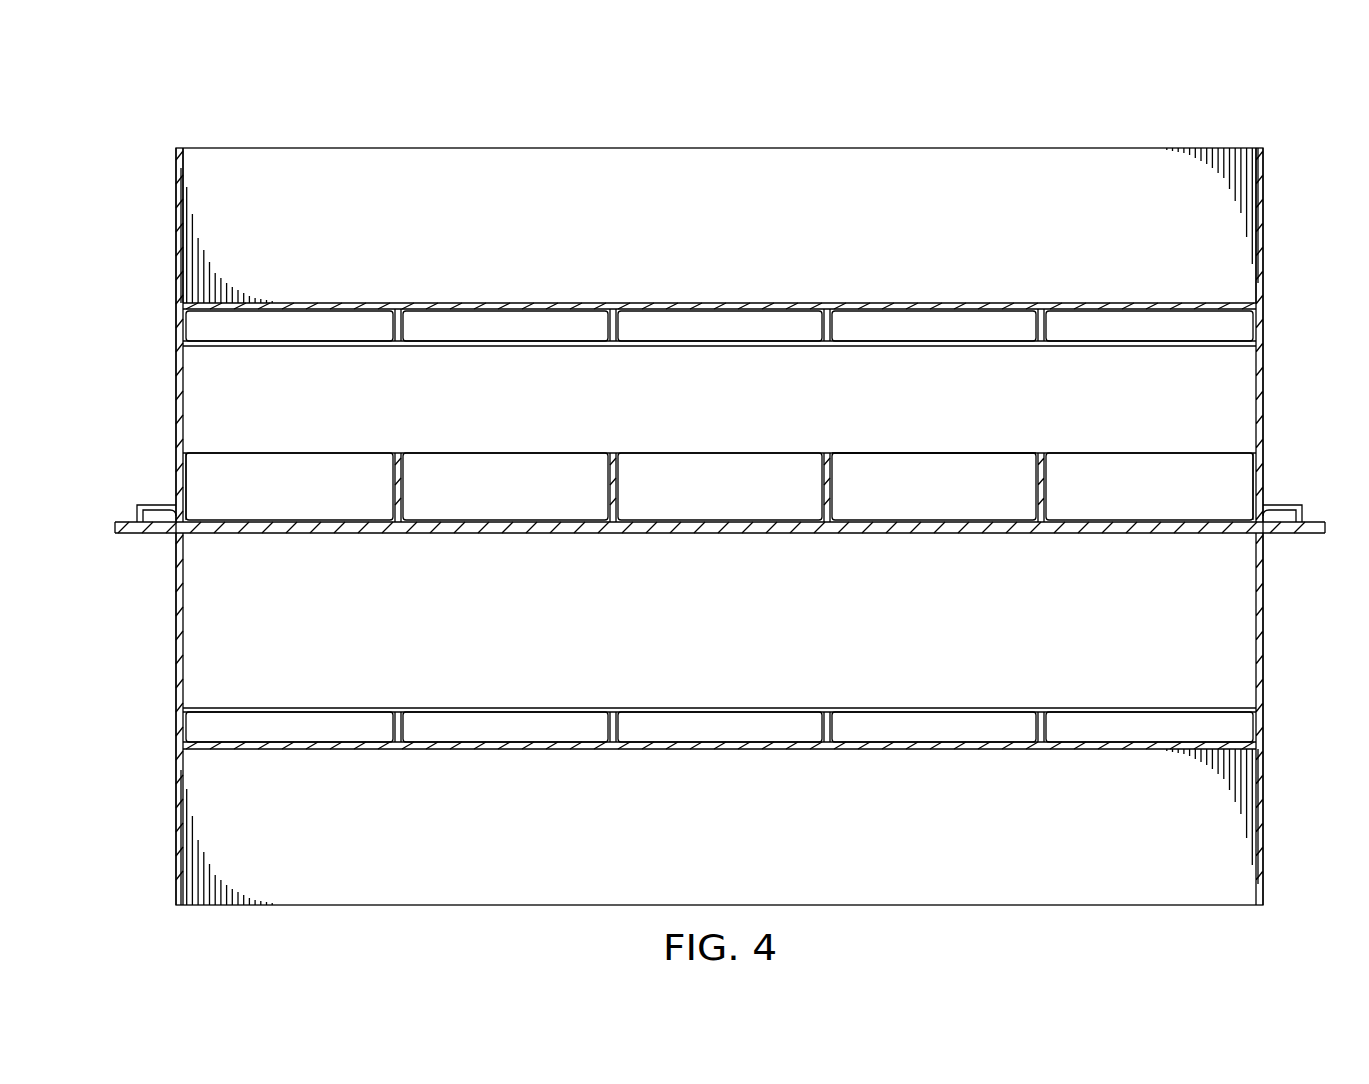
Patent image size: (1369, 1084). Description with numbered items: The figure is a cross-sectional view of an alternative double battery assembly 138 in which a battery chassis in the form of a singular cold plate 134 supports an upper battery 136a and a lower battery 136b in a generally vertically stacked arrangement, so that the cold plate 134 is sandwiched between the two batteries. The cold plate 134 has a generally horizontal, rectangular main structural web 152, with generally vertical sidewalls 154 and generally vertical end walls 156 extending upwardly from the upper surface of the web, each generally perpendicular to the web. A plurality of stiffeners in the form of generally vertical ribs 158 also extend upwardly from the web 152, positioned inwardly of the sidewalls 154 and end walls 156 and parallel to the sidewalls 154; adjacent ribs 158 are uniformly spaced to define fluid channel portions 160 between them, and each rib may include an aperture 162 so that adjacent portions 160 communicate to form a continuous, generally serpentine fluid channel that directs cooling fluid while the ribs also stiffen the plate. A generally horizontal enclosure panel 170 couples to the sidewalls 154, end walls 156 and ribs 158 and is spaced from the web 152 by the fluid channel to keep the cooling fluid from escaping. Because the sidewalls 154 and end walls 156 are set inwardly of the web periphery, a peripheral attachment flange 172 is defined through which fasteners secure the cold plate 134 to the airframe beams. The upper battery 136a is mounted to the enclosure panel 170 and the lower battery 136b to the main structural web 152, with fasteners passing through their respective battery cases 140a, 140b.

The double battery assembly 138 is at (244, 94).
The upper battery 136a is at (166, 363).
The lower battery 136b is at (166, 676).
The battery case 140a is at (176, 418).
The battery case 140b is at (176, 622).
The main structural web 152 is at (272, 521).
The peripheral attachment flange 172 is at (122, 523).
The cold plate 134 is at (448, 441).
The fluid channel portions 160 is at (523, 471).
The end walls 156 is at (1144, 470).
The aperture 162 is at (395, 480).
The ribs 158 is at (1038, 500).
The enclosure panel 170 is at (936, 452).
The sidewalls 154 is at (186, 468).